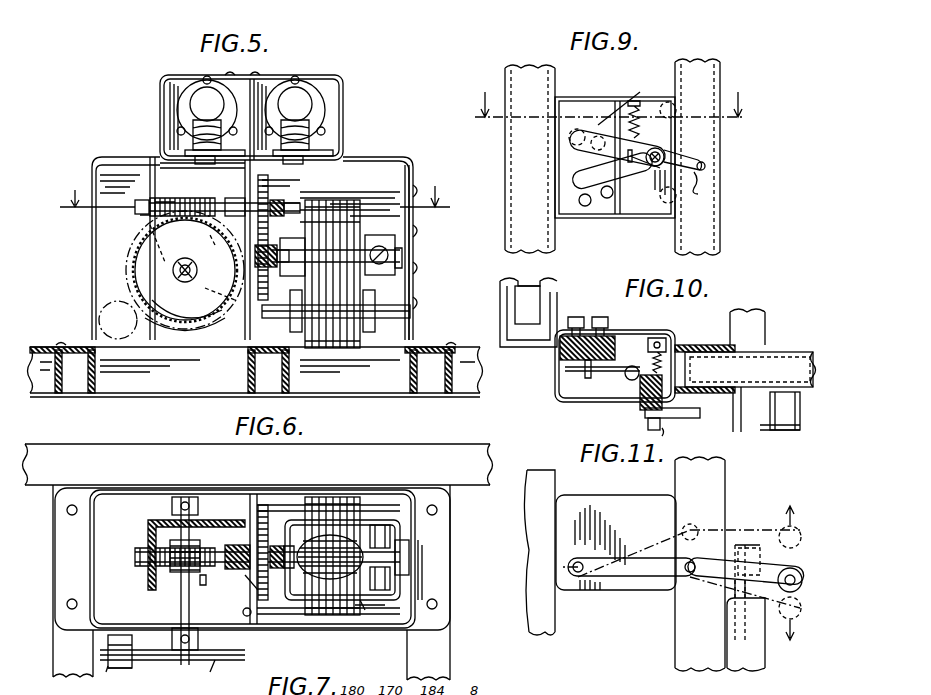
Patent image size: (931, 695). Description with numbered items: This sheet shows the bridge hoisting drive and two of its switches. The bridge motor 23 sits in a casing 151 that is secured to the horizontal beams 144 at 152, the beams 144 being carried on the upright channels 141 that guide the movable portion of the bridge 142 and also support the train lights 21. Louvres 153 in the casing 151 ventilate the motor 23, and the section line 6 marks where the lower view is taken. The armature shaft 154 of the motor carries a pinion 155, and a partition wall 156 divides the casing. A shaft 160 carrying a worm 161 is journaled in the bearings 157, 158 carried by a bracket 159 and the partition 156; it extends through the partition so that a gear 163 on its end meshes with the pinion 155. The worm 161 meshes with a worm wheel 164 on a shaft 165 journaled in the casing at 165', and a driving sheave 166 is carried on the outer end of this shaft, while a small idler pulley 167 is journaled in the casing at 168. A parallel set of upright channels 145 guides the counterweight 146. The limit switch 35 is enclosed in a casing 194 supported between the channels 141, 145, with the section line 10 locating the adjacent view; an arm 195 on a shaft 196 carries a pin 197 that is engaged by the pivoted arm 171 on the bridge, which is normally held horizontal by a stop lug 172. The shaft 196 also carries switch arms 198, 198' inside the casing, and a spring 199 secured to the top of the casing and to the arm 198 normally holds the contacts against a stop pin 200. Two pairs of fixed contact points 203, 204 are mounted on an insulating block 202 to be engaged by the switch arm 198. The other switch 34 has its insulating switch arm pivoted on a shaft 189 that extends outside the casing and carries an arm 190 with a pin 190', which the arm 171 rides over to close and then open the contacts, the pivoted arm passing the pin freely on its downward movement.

In FIG. 5, the train lights 21 is at (343, 90).
In FIG. 5, the bridge motor 23 is at (333, 210).
In FIG. 6, the bridge motor 23 is at (330, 498).
In FIG. 5, the section line 6- 6 is at (255, 189).
In FIG. 9, the section line 10- 10 is at (612, 97).
In FIG. 11, the switch 34 is at (590, 505).
In FIG. 9, the switch 35 is at (578, 95).
In FIG. 9, the upright channels 141 is at (720, 160).
In FIG. 10, the upright channels 141 is at (700, 345).
In FIG. 11, the upright channels 141 is at (680, 657).
In FIG. 10, the movable portion of the bridge 142 is at (785, 362).
In FIG. 11, the movable portion of the bridge 142 is at (745, 668).
In FIG. 5, the horizontal beams 144 is at (88, 370).
In FIG. 6, the horizontal beams 144 is at (445, 447).
In FIG. 9, the upright channels 145 is at (510, 160).
In FIG. 10, the upright channels 145 is at (556, 318).
In FIG. 11, the upright channels 145 is at (533, 636).
In FIG. 10, the counterweight 146 is at (528, 286).
In FIG. 5, the casing 151 is at (385, 164).
In FIG. 6, the casing 151 is at (110, 492).
In FIG. 5, the casing securing point 152 is at (92, 343).
In FIG. 6, the casing securing point 152 is at (68, 513).
In FIG. 5, the louvres 153 is at (413, 255).
In FIG. 6, the louvres 153 is at (418, 558).
In FIG. 5, the armature shaft 154 is at (270, 262).
In FIG. 5, the pinion 155 is at (255, 262).
In FIG. 6, the pinion 155 is at (250, 592).
In FIG. 5, the partition wall 156 is at (250, 332).
In FIG. 6, the partition wall 156 is at (243, 612).
In FIG. 5, the bearing 157 is at (150, 202).
In FIG. 6, the bearing 157 is at (150, 550).
In FIG. 5, the bearing 158 is at (236, 198).
In FIG. 6, the bearing 158 is at (236, 545).
In FIG. 5, the bracket 159 is at (150, 214).
In FIG. 6, the bracket 159 is at (213, 520).
In FIG. 5, the shaft 160 is at (135, 209).
In FIG. 5, the worm 161 is at (185, 270).
In FIG. 6, the worm 161 is at (170, 570).
In FIG. 5, the gear 163 is at (263, 198).
In FIG. 6, the gear 163 is at (265, 503).
In FIG. 5, the worm wheel 164 is at (150, 258).
In FIG. 6, the worm wheel 164 is at (204, 572).
In FIG. 5, the shaft 165 is at (166, 272).
In FIG. 6, the shaft 165 is at (202, 581).
In FIG. 6, the shaft journal 165' is at (161, 573).
In FIG. 5, the driving sheave 166 is at (172, 325).
In FIG. 6, the driving sheave 166 is at (220, 671).
In FIG. 5, the idler pulley 167 is at (135, 325).
In FIG. 6, the idler pulley 167 is at (105, 680).
In FIG. 6, the idler pulley journal 168 is at (132, 640).
In FIG. 10, the pivoted arm 171 is at (770, 432).
In FIG. 11, the pivoted arm 171 is at (706, 588).
In FIG. 10, the stop lug 172 is at (741, 410).
In FIG. 11, the stop lug 172 is at (750, 635).
In FIG. 11, the shaft 189 is at (578, 577).
In FIG. 11, the arm 190 is at (629, 570).
In FIG. 11, the pin 190' is at (671, 567).
In FIG. 9, the casing 194 is at (617, 98).
In FIG. 9, the arm 195 is at (690, 154).
In FIG. 10, the arm 195 is at (670, 418).
In FIG. 9, the shaft 196 is at (664, 152).
In FIG. 10, the shaft 196 is at (640, 405).
In FIG. 9, the pin 197 is at (705, 182).
In FIG. 10, the pin 197 is at (686, 432).
In FIG. 9, the switch arm 198 is at (592, 146).
In FIG. 10, the switch arm 198 is at (602, 377).
In FIG. 9, the switch arm 198' is at (586, 172).
In FIG. 9, the spring 199 is at (646, 119).
In FIG. 9, the stop pin 200 is at (642, 92).
In FIG. 9, the insulating block 202 is at (592, 215).
In FIG. 9, the fixed contact points 203 is at (615, 160).
In FIG. 9, the fixed contact points 204 is at (592, 201).